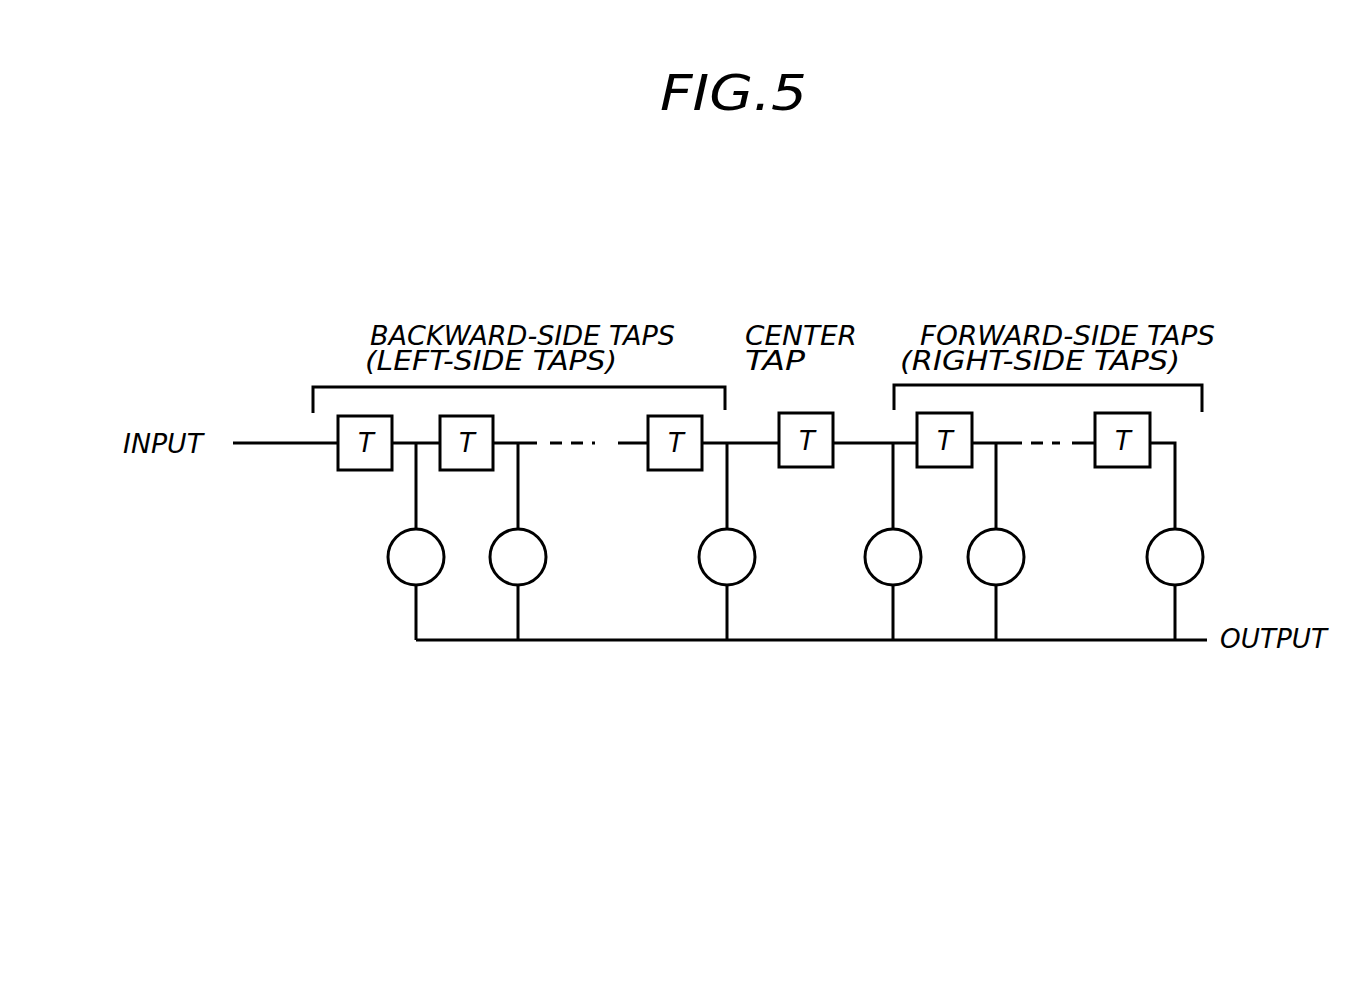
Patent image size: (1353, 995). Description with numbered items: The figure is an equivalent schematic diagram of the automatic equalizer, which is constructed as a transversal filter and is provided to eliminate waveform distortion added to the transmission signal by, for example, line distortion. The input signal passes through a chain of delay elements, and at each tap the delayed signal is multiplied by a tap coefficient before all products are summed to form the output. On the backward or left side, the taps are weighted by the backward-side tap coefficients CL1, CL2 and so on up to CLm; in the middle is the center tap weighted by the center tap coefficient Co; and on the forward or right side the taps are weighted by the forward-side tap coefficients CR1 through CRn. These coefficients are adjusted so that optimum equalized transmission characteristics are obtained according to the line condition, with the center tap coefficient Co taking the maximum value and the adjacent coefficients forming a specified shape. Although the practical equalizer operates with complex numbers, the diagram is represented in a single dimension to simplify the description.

The backward-side tap coefficient CL1 is at (387, 557).
The backward-side tap coefficient CL2 is at (489, 557).
The backward-side tap coefficient CLm is at (570, 557).
The center tap coefficient Co is at (835, 557).
The forward-side tap coefficient CR1 is at (967, 557).
The forward-side tap coefficient CRn is at (1146, 557).